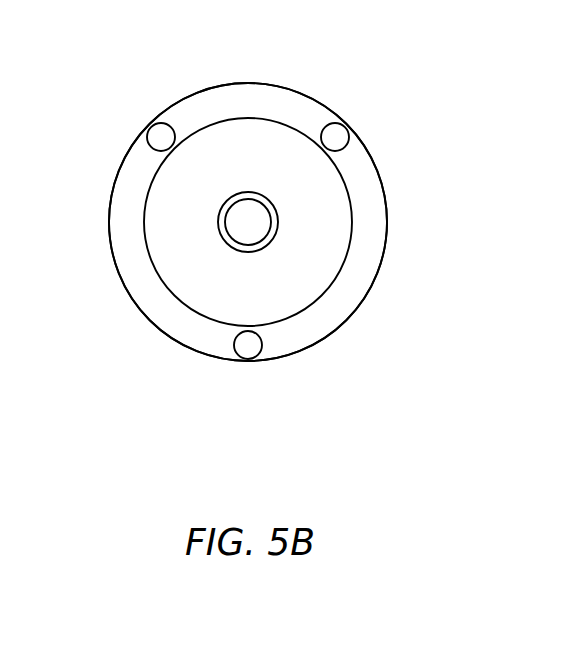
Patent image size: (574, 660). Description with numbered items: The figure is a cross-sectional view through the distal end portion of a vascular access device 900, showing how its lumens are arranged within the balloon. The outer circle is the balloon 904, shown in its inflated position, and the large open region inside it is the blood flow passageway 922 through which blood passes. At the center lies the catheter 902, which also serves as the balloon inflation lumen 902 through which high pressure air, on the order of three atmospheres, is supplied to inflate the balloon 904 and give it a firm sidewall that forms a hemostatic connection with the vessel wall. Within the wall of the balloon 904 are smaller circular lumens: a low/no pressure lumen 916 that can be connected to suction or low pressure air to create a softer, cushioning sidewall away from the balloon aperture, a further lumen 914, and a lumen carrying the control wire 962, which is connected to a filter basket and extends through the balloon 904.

The vascular access device 900 is at (248, 191).
The balloon 904 is at (287, 222).
The blood flow passageway 922 is at (192, 222).
The catheter 902 is at (189, 282).
The hole 914 is at (128, 123).
The low/no pressure lumen 916 is at (367, 126).
The control wire 962 is at (279, 359).